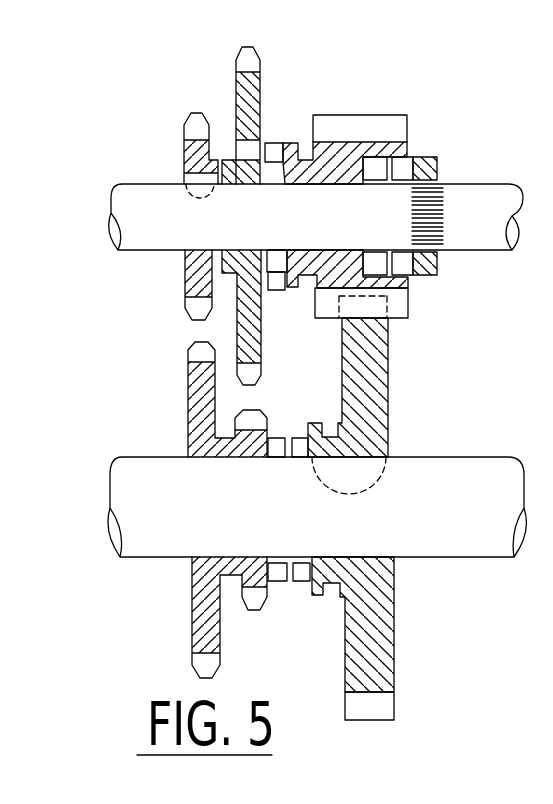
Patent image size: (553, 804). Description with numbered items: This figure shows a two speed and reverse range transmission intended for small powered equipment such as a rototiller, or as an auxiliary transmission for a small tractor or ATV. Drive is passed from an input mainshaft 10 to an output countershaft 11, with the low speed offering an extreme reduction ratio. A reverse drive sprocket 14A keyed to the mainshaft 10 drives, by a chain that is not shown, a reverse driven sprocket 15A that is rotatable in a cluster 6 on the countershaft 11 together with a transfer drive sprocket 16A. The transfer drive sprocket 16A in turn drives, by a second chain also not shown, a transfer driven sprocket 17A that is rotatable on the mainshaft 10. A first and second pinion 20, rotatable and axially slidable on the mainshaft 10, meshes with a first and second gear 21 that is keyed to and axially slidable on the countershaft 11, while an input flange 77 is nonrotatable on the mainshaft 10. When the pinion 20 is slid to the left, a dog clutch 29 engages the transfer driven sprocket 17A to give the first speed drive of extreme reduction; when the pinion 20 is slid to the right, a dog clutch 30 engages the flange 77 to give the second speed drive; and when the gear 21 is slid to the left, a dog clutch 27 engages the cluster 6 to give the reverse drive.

The input mainshaft 10 is at (471, 188).
The output countershaft 11 is at (472, 463).
The reverse drive sprocket 14A is at (197, 117).
The reverse driven sprocket 15A is at (196, 666).
The transfer drive sprocket 16A is at (255, 603).
The transfer driven sprocket 17A is at (258, 62).
The first and second pinion 20 is at (398, 128).
The first and second gear 21 is at (396, 706).
The dog clutch 27 is at (295, 437).
The dog clutch 29 is at (277, 308).
The dog clutch 30 is at (404, 170).
The input flange 77 is at (432, 277).
The cluster 6 is at (247, 479).